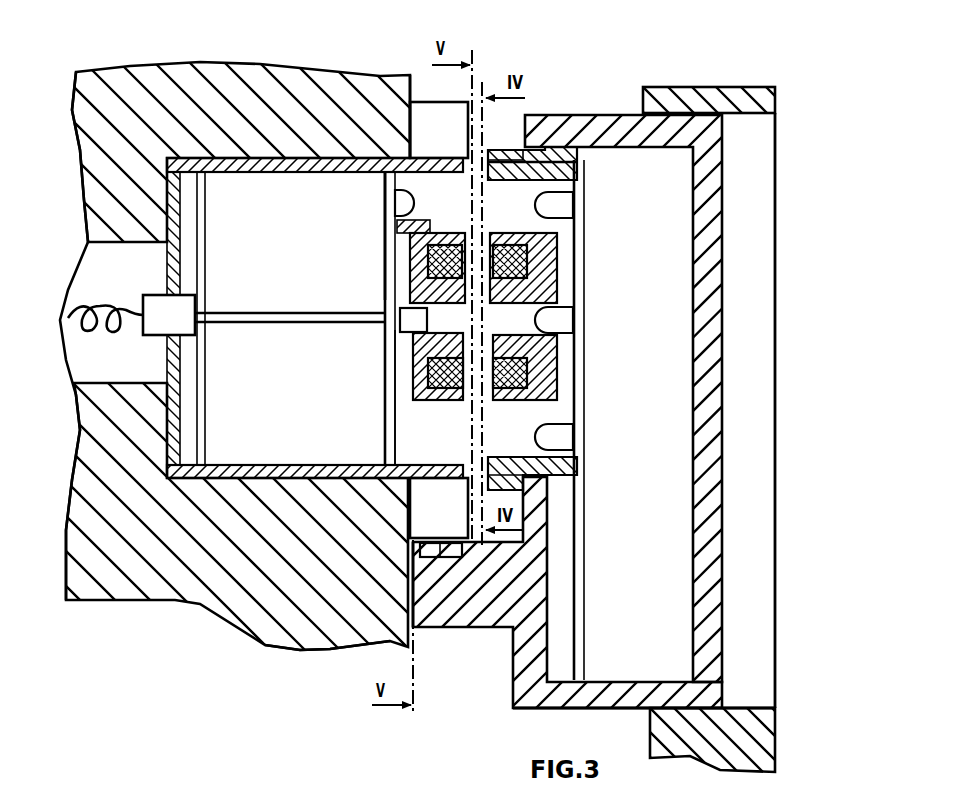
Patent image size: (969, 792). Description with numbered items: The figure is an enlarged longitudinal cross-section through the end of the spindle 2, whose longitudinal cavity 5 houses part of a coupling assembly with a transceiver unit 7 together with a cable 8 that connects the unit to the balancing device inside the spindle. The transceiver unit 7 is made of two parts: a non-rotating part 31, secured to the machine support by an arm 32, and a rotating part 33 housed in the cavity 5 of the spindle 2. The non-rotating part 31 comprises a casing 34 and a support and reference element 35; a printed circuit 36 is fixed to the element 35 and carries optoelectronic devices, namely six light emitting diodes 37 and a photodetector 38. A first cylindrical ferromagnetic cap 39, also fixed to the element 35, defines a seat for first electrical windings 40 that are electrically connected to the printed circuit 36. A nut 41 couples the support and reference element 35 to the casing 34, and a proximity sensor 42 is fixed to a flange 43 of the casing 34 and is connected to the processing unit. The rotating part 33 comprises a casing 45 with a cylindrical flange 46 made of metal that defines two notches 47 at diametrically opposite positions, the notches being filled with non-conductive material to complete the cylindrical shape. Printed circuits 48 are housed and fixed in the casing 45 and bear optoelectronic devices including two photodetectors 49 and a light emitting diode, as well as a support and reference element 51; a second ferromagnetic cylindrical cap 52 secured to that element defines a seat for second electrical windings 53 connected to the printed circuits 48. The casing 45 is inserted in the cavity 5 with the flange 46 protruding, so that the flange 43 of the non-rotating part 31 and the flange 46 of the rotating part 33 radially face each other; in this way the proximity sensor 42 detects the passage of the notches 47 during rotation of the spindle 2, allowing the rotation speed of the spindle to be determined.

The spindle 2 is at (200, 586).
The longitudinal cavity 5 is at (97, 378).
The transceiver unit 7 is at (583, 100).
The cable 8 is at (72, 291).
The non-rotating part 31 is at (740, 157).
The arm 32 is at (770, 727).
The rotating part 33 is at (160, 282).
The casing 34 is at (705, 580).
The support and reference element 35 is at (578, 480).
The printed circuit 36 is at (600, 248).
The light emitting diodes 37 is at (573, 205).
The photodetector 38 is at (575, 320).
The first cylindrical ferromagnetic cap 39 is at (515, 390).
The first electrical windings 40 is at (523, 362).
The nut 41 is at (497, 150).
The proximity sensor 42 is at (421, 557).
The flange 43 is at (465, 615).
The casing 45 is at (322, 650).
The cylindrical flange 46 is at (410, 103).
The notches 47 is at (425, 165).
The printed circuits 48 is at (385, 243).
The photodetectors 49 is at (402, 165).
The support and reference element 51 is at (348, 135).
The second ferromagnetic cylindrical cap 52 is at (385, 347).
The sleeve wall 53 is at (385, 369).